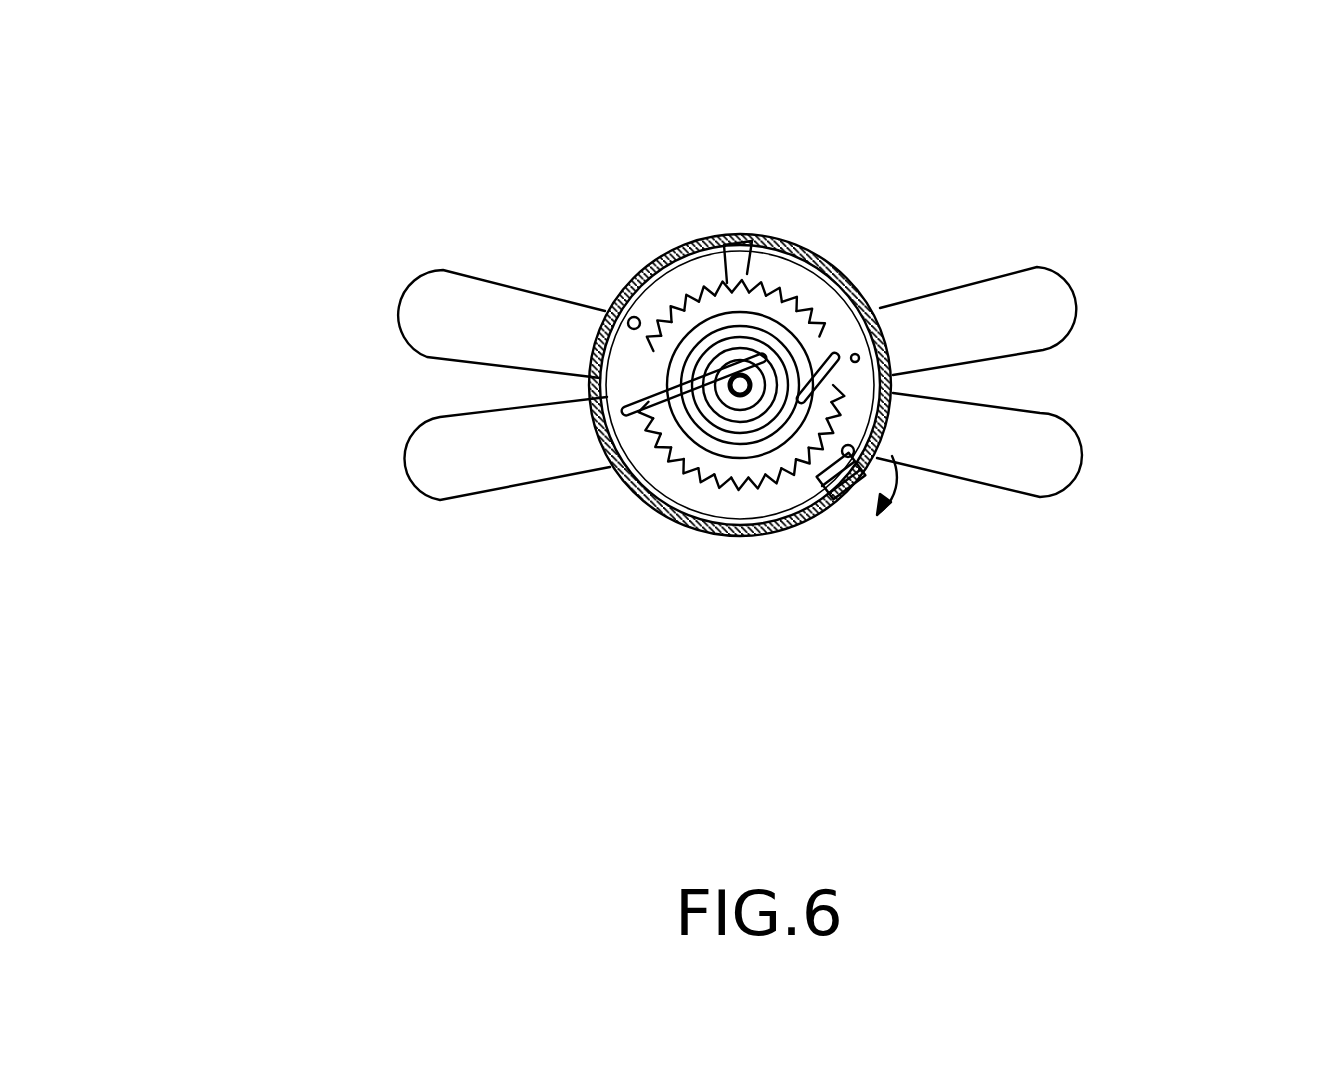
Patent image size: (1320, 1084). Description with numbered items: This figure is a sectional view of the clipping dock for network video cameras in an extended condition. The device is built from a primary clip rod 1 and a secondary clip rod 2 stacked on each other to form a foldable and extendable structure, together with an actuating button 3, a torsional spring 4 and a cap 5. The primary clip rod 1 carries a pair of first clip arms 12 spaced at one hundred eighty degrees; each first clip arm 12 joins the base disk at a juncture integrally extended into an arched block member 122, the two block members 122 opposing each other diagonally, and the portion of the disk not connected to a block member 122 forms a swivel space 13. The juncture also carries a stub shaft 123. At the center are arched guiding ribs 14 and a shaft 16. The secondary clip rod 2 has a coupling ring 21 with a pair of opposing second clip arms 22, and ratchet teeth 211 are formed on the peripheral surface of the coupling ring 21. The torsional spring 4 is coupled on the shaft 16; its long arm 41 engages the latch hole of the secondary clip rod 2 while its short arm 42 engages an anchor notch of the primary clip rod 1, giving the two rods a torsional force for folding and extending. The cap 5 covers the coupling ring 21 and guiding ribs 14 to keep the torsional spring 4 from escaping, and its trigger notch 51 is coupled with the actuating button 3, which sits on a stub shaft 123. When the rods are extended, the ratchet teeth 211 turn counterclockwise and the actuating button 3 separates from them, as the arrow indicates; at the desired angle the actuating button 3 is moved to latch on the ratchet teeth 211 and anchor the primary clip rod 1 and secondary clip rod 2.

The primary clip rod 1 is at (385, 287).
The secondary clip rod 2 is at (1067, 240).
The actuating button 3 is at (847, 492).
The torsional spring 4 is at (746, 355).
The cap 5 is at (705, 528).
The first clip arm 12 is at (500, 323).
The swivel space 13 is at (683, 488).
The arched guiding rib 14 is at (702, 440).
The shaft 16 is at (762, 360).
The coupling ring 21 is at (702, 303).
The second clip arm 22 is at (508, 447).
The long arm 41 is at (658, 390).
The short arm 42 is at (835, 357).
The trigger notch 51 is at (868, 452).
The arched block member 122 is at (781, 497).
The stub shaft 123 is at (868, 455).
The ratchet teeth 211 is at (660, 317).